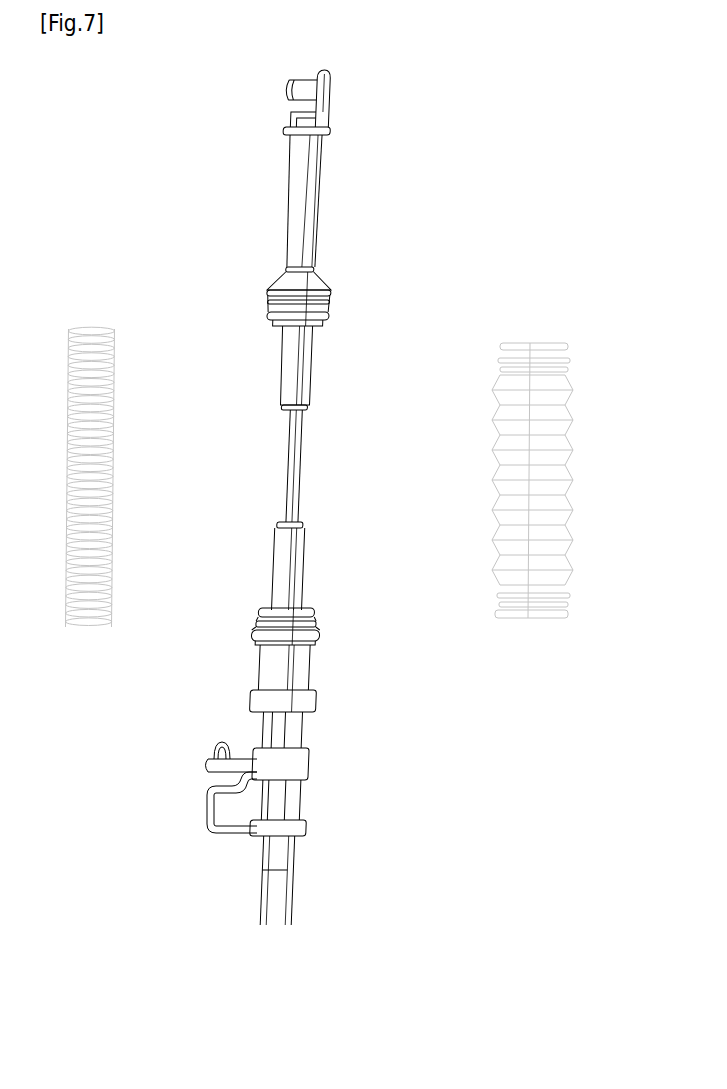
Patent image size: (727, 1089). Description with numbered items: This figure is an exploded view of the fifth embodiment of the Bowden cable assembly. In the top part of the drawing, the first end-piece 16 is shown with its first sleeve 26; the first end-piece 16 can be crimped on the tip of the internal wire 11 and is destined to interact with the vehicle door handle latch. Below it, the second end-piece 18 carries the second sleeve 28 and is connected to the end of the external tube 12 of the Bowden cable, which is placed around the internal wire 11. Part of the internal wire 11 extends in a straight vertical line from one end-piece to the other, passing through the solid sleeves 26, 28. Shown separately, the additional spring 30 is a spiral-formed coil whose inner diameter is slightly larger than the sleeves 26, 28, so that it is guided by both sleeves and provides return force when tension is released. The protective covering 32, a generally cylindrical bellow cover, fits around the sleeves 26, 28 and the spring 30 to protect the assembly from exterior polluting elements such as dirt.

The first end-piece 16 is at (313, 162).
The first sleeve 26 is at (295, 358).
The internal wire 11 is at (293, 472).
The second sleeve 28 is at (290, 558).
The second end-piece 18 is at (302, 673).
The external tube 12 is at (285, 887).
The spring 30 is at (100, 474).
The protective covering 32 is at (503, 452).